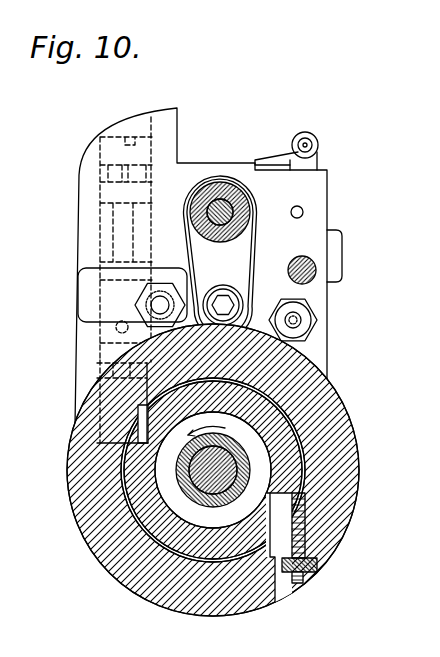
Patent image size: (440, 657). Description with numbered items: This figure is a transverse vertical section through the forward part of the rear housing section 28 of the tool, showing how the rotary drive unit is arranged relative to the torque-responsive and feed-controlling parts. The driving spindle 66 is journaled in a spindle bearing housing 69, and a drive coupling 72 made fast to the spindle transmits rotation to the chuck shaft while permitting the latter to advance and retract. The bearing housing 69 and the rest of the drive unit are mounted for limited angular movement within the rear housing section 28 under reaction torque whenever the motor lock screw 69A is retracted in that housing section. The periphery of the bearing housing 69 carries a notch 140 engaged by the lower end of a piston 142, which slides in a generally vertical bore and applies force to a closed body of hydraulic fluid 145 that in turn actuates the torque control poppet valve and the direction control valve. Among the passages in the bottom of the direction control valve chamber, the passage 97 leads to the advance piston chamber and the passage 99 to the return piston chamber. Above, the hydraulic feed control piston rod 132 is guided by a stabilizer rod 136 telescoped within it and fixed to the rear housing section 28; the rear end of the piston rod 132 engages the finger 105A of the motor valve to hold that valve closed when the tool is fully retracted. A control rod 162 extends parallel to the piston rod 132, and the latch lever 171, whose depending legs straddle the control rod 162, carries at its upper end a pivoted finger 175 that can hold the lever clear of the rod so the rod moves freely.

The rear housing section 28 is at (347, 453).
The driving spindle 66 is at (226, 493).
The spindle bearing housing 69 is at (287, 429).
The motor lock screw 69A is at (302, 583).
The drive coupling 72 is at (184, 499).
The passage 97 is at (160, 302).
The passage 99 is at (303, 320).
The finger 105A is at (306, 257).
The piston rod 132 is at (252, 204).
The stabilizer rod 136 is at (216, 205).
The notch 140 is at (133, 433).
The piston 142 is at (133, 428).
The closed body of hydraulic fluid 145 is at (112, 324).
The control rod 162 is at (295, 226).
The latch lever 171 is at (308, 160).
The finger 175 is at (276, 158).